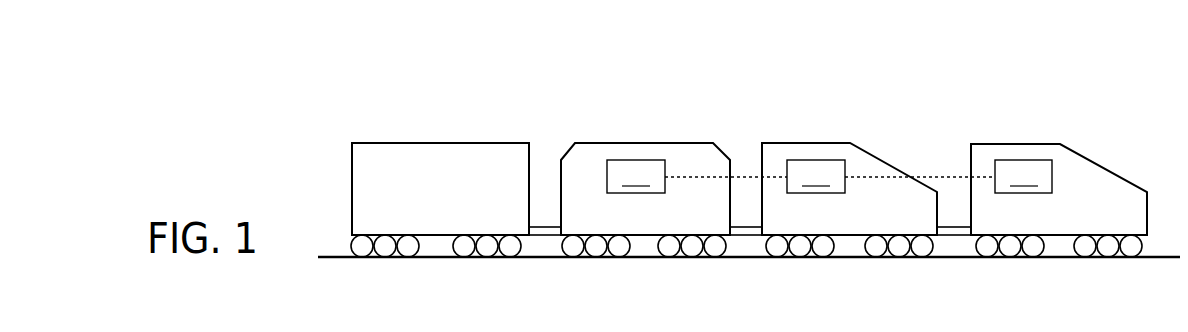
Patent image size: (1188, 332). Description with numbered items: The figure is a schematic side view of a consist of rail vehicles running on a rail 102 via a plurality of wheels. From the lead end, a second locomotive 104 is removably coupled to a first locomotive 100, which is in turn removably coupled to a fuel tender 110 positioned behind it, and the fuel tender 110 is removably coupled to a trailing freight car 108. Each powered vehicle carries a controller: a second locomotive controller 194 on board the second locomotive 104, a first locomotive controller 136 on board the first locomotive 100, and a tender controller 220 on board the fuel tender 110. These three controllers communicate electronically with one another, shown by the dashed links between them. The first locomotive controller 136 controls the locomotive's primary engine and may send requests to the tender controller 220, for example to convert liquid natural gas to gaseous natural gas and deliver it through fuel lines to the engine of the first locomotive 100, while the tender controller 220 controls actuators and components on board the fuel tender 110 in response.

The first locomotive 100 is at (849, 178).
The rail 102 is at (943, 258).
The second locomotive 104 is at (1059, 178).
The freight car 108 is at (415, 143).
The fuel tender 110 is at (645, 178).
The first locomotive controller 136 is at (817, 143).
The second locomotive controller 194 is at (1000, 144).
The tender controller 220 is at (632, 143).